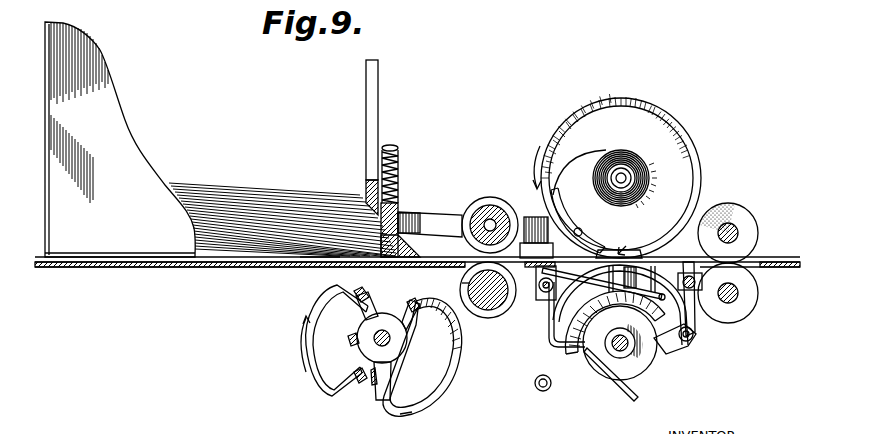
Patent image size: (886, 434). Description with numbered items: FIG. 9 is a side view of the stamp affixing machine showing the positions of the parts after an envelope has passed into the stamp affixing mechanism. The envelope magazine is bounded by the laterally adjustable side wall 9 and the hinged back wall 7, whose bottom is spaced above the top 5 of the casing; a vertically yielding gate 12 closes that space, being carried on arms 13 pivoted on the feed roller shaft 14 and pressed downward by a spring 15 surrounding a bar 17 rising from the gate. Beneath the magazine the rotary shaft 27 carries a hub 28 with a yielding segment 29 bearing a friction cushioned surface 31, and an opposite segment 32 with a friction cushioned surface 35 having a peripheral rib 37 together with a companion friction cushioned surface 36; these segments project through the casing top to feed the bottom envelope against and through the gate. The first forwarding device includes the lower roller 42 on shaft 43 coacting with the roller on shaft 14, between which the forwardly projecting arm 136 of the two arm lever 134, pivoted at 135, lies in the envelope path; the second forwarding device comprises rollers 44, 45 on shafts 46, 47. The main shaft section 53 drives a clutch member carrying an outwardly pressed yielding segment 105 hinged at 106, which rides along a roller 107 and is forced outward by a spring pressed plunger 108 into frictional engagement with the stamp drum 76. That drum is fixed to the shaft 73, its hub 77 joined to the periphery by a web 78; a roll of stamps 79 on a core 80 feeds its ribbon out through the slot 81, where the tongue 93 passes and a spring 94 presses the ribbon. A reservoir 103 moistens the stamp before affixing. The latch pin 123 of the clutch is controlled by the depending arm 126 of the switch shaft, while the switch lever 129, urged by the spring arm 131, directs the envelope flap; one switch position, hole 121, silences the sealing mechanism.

The top of the casing 5 is at (187, 263).
The back wall 7 is at (366, 124).
The laterally adjustable side wall 9 is at (120, 139).
The vertically yielding gate 12 is at (408, 262).
The arms 13 is at (422, 222).
The feed roller shaft 14 is at (482, 212).
The spring 15 is at (400, 160).
The bar 17 is at (390, 146).
The rotary shaft 27 is at (388, 345).
The hub 28 is at (355, 345).
The yielding segment 29 is at (364, 376).
The friction cushioned surface 31 is at (302, 336).
The segment 32 is at (432, 388).
The friction cushioned surface 35 is at (410, 412).
The friction cushioned surface 36 is at (330, 263).
The peripheral rib 37 is at (452, 374).
The roller 42 is at (505, 310).
The shaft 43 is at (492, 300).
The roller 44 is at (752, 233).
The roller 45 is at (748, 306).
The shaft 46 is at (730, 222).
The shaft 47 is at (740, 293).
The main shaft section 53 is at (616, 350).
The shaft 73 is at (630, 176).
The stamp drum 76 is at (645, 108).
The hub 77 is at (640, 179).
The web 78 is at (608, 130).
The roll of stamps 79 is at (604, 173).
The core 80 is at (624, 172).
The slot 81 is at (634, 245).
The tongue 93 is at (619, 240).
The spring 94 is at (584, 226).
The reservoir 103 is at (536, 214).
The yielding segment 105 is at (566, 337).
The hinge 106 is at (672, 342).
The roller 107 is at (542, 391).
The spring pressed plunger 108 is at (660, 273).
The hole 121 is at (590, 360).
The pin 123 is at (652, 365).
The depending arm 126 is at (700, 322).
The switch lever 129 is at (768, 264).
The spring arm 131 is at (638, 281).
The two arm lever 134 is at (536, 251).
The pivot 135 is at (540, 292).
The forwardly projecting arm 136 is at (446, 284).